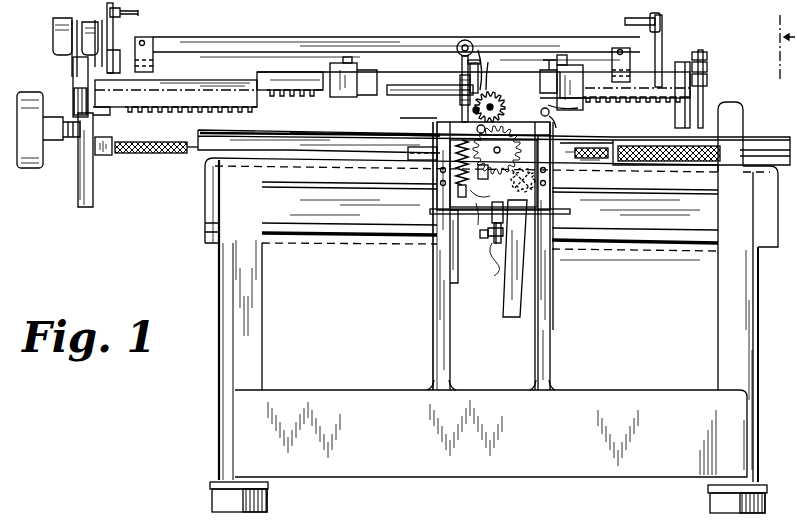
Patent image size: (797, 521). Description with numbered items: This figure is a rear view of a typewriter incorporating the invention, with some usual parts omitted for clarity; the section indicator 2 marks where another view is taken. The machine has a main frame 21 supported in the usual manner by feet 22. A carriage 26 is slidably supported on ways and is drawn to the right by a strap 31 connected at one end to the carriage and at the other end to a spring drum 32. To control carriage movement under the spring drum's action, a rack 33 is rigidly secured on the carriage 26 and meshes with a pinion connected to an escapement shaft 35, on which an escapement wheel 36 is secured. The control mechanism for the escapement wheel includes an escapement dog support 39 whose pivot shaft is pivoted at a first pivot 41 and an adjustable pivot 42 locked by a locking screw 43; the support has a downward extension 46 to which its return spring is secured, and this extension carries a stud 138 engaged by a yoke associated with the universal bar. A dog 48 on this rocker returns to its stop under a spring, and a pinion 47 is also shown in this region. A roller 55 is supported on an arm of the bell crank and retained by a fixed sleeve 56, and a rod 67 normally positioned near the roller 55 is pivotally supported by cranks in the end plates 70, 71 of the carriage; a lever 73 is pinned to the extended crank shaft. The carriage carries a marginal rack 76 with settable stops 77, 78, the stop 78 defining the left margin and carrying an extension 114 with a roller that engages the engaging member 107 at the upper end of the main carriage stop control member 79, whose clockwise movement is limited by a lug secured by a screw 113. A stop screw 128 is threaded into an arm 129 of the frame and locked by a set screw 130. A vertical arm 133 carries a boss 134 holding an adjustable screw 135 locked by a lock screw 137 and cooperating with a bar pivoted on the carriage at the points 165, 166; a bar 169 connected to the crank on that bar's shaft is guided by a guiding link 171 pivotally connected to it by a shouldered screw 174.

The section line 2 is at (777, 47).
The main frame 21 is at (218, 382).
The feet 22 is at (264, 498).
The carriage 26 is at (88, 133).
The strap 31 is at (142, 160).
The spring drum 32 is at (725, 150).
The rack 33 is at (217, 98).
The escapement shaft 35 is at (503, 150).
The escapement wheel 36 is at (480, 72).
The escapement dog support 39 is at (484, 236).
The pivot 41 is at (428, 256).
The pivot 42 is at (566, 212).
The locking screw 43 is at (548, 208).
The downward extension 46 is at (504, 236).
The pinion 47 is at (513, 187).
The dog 48 is at (472, 182).
The roller 55 is at (488, 62).
The fixed sleeve 56 is at (478, 50).
The rod 67 is at (405, 88).
The end plate 70 is at (662, 35).
The end plate 71 is at (112, 52).
The lever 73 is at (54, 40).
The marginal rack 76 is at (270, 96).
The settable stop 77 is at (333, 98).
The settable stop 78 is at (572, 66).
The main carriage stop control member 79 is at (503, 298).
The engaging member 107 is at (556, 120).
The screw 113 is at (536, 63).
The extension 114 is at (578, 110).
The stop screw 128 is at (460, 104).
The arm 129 is at (410, 122).
The set screw 130 is at (455, 118).
The arm 133 is at (462, 72).
The boss 134 is at (460, 42).
The adjustable screw 135 is at (460, 58).
The lock screw 137 is at (472, 42).
The stud 138 is at (484, 262).
The pivot point 165 is at (152, 50).
The pivot 166 is at (640, 42).
The bar 169 is at (708, 54).
The guiding link 171 is at (710, 76).
The shouldered screw 174 is at (708, 64).